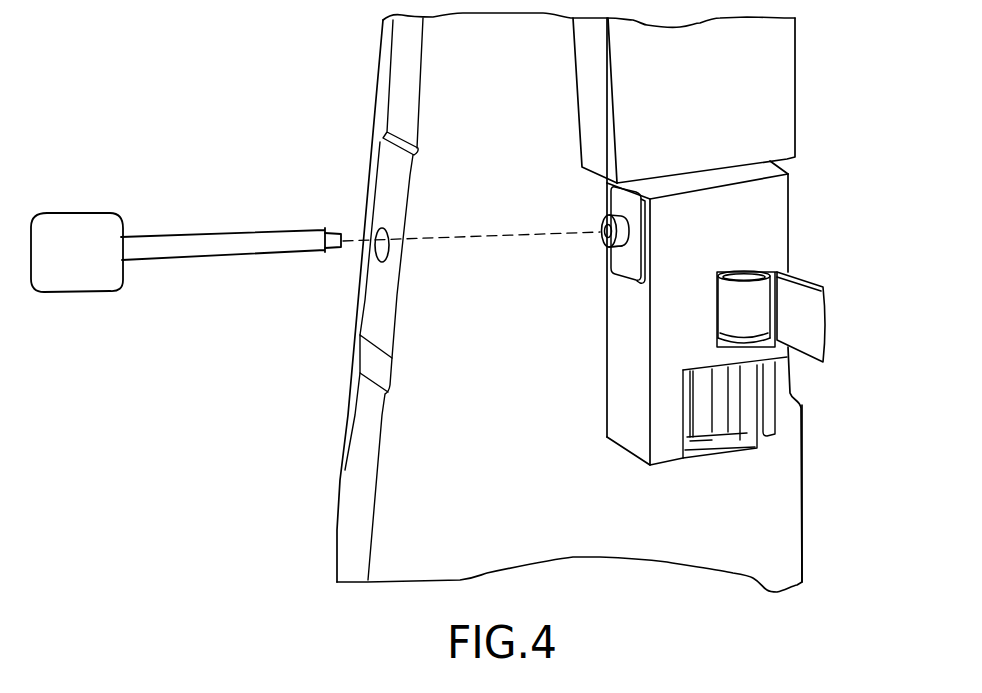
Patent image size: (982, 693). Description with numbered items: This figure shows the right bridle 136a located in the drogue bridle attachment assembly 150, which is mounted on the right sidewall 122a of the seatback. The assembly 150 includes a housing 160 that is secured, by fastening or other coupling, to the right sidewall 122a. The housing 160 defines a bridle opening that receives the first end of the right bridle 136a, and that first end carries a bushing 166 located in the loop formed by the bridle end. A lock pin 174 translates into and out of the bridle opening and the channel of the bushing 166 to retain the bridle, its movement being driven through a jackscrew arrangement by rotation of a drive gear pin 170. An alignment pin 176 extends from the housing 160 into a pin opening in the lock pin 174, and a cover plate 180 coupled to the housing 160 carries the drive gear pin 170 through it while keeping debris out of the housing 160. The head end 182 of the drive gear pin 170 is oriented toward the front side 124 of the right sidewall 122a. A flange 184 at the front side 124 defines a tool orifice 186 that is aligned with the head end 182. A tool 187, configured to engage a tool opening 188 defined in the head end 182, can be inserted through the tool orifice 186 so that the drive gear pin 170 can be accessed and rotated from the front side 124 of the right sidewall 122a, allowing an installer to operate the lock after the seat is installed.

The right sidewall 122a is at (514, 114).
The front side 124 is at (388, 184).
The right bridle 136a is at (803, 313).
The drogue bridle attachment assembly 150 is at (812, 175).
The housing 160 is at (745, 238).
The bushing 166 is at (747, 298).
The drive gear pin 170 is at (606, 249).
The lock pin 174 is at (747, 405).
The alignment pin 176 is at (703, 418).
The cover plate 180 is at (626, 197).
The head end 182 is at (611, 218).
The flange 184 is at (372, 318).
The tool orifice 186 is at (382, 242).
The tool 187 is at (192, 240).
The tool opening 188 is at (602, 231).